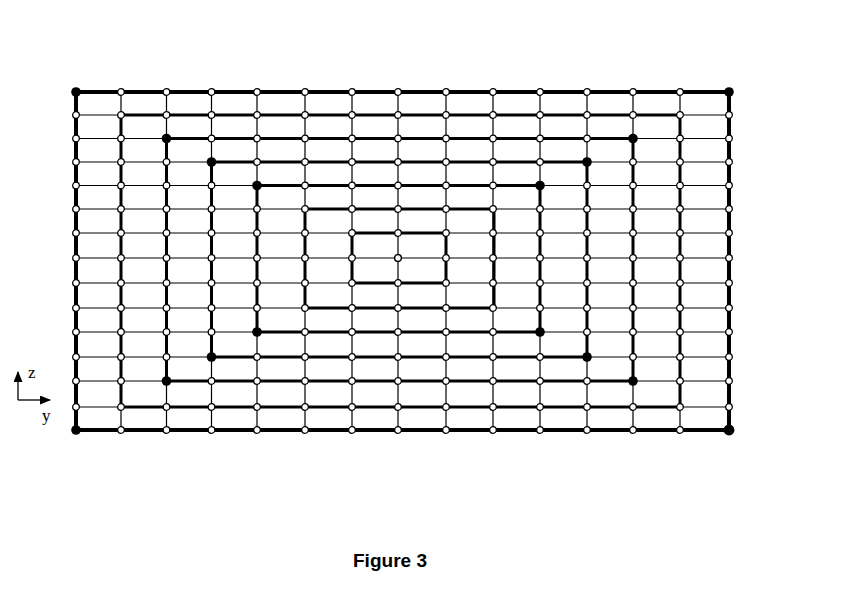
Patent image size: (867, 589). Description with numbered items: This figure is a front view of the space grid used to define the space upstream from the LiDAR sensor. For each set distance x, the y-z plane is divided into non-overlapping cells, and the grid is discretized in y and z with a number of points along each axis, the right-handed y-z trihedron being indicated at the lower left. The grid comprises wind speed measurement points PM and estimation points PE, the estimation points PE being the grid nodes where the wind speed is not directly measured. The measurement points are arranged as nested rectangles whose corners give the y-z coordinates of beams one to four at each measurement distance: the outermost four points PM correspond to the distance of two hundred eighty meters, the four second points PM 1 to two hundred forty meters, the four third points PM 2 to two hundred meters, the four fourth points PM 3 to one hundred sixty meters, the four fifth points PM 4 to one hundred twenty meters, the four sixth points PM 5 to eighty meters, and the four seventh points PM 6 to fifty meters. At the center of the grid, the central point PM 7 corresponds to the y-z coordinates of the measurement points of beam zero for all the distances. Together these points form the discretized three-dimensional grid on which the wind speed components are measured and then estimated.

The estimation points PE is at (594, 89).
The wind speed measurement points PM is at (734, 436).
The second points PM 1 is at (670, 410).
The third points PM 2 is at (631, 381).
The fourth points PM 3 is at (596, 357).
The fifth points PM 4 is at (553, 333).
The sixth points PM 5 is at (502, 307).
The seventh points PM 6 is at (352, 290).
The central point PM 7 is at (392, 257).